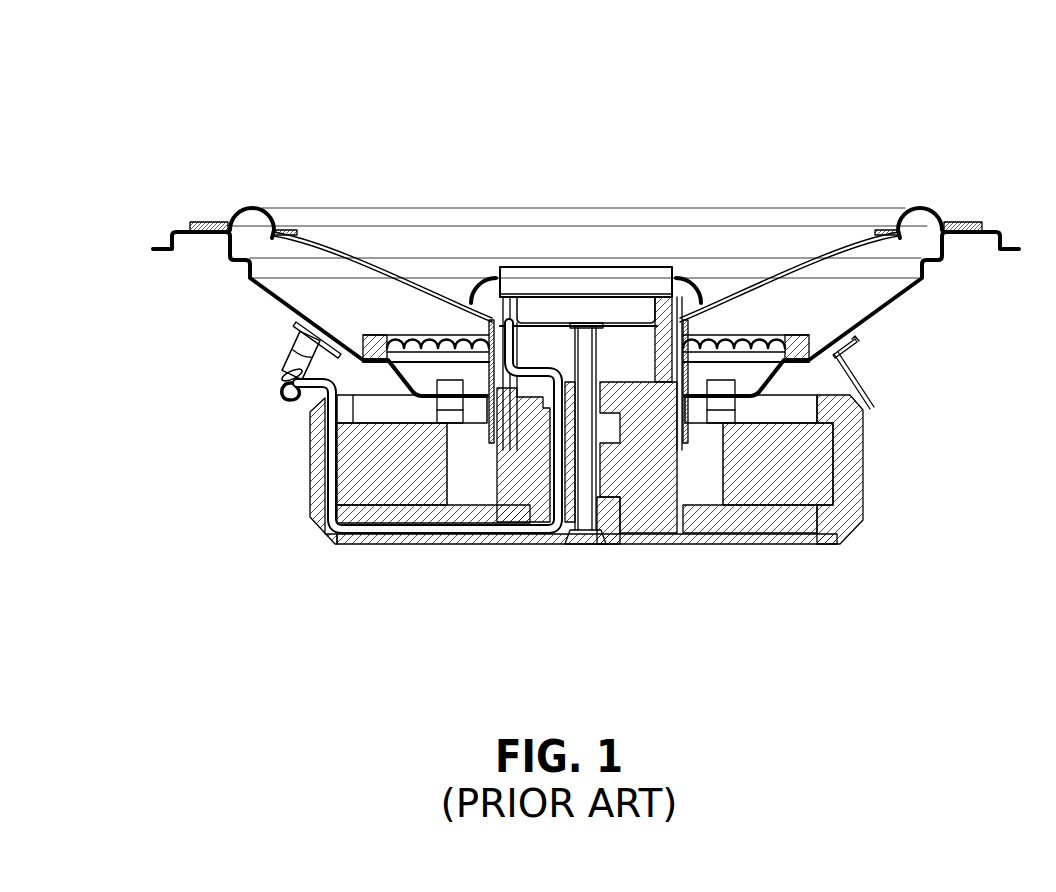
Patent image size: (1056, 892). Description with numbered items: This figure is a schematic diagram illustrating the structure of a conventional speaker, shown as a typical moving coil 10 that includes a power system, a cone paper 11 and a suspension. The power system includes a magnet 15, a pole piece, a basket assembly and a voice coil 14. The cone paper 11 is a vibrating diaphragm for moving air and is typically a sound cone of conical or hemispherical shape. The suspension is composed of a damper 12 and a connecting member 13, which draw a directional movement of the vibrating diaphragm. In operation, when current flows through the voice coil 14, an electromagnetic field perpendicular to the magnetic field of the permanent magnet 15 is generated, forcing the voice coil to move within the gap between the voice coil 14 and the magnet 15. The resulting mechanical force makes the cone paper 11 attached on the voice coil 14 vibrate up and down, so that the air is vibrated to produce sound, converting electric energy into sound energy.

The moving coil 10 is at (576, 127).
The cone paper 11 is at (790, 262).
The damper 12 is at (758, 333).
The connecting member 13 is at (920, 208).
The voice coil 14 is at (665, 313).
The magnet 15 is at (795, 470).